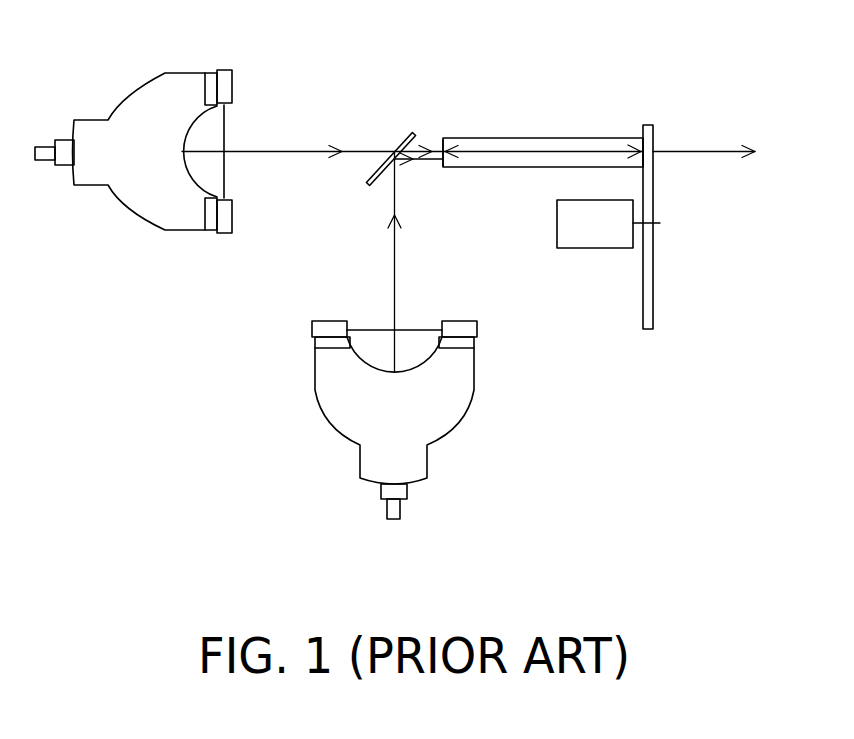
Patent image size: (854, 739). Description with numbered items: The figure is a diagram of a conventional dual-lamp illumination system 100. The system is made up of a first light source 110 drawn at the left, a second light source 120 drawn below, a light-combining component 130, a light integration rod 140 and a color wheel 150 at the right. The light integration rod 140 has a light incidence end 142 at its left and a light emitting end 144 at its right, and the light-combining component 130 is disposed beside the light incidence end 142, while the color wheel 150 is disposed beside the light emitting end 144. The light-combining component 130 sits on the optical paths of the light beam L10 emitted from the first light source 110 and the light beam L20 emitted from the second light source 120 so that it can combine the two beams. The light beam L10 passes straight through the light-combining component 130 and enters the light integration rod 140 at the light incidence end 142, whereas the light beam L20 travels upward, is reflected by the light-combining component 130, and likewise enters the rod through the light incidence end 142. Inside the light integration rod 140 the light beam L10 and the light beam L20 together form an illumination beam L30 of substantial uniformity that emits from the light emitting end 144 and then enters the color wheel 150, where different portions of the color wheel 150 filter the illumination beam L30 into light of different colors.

The dual-lamp illumination system 100 is at (673, 523).
The first light source 110 is at (150, 98).
The second light source 120 is at (342, 403).
The light-combining component 130 is at (403, 135).
The light integration rod 140 is at (520, 145).
The light incidence end 142 is at (455, 153).
The light emitting end 144 is at (634, 141).
The color wheel 150 is at (647, 277).
The light beam L10 is at (315, 153).
The light beam L20 is at (397, 238).
The illumination beam L30 is at (703, 152).